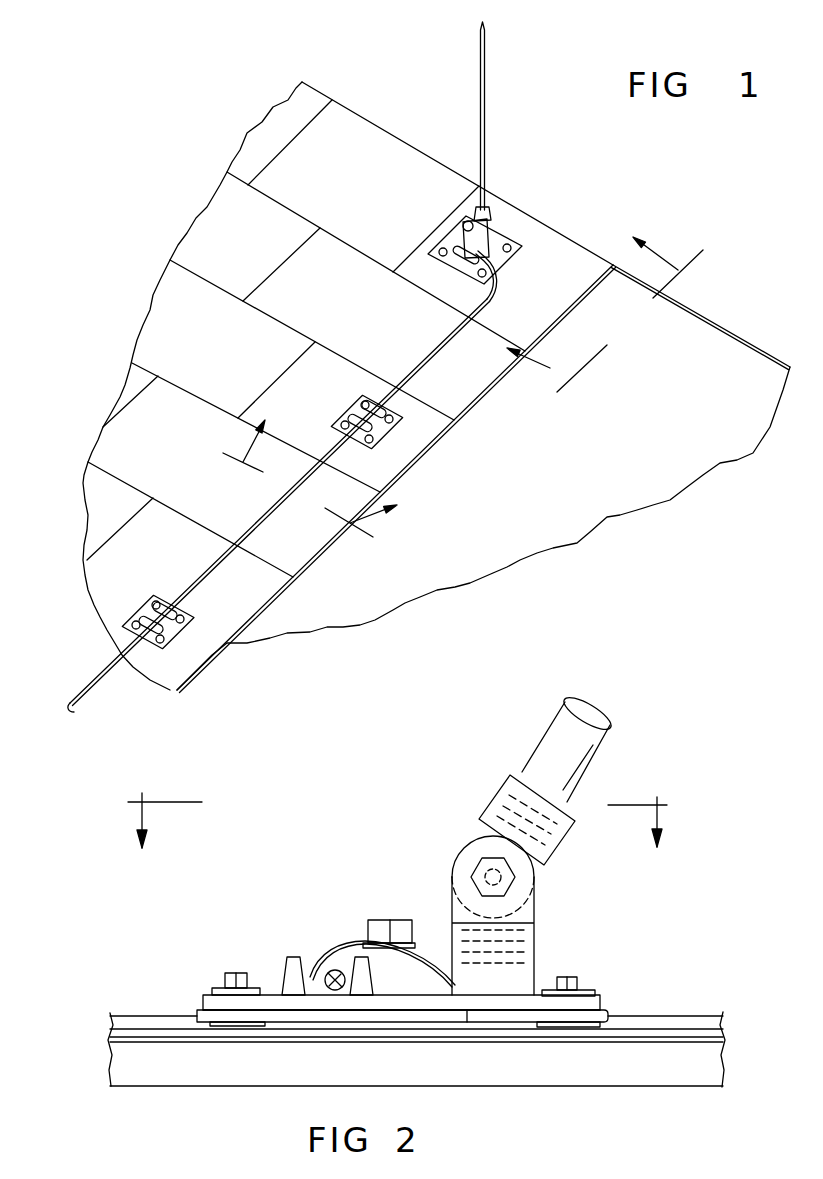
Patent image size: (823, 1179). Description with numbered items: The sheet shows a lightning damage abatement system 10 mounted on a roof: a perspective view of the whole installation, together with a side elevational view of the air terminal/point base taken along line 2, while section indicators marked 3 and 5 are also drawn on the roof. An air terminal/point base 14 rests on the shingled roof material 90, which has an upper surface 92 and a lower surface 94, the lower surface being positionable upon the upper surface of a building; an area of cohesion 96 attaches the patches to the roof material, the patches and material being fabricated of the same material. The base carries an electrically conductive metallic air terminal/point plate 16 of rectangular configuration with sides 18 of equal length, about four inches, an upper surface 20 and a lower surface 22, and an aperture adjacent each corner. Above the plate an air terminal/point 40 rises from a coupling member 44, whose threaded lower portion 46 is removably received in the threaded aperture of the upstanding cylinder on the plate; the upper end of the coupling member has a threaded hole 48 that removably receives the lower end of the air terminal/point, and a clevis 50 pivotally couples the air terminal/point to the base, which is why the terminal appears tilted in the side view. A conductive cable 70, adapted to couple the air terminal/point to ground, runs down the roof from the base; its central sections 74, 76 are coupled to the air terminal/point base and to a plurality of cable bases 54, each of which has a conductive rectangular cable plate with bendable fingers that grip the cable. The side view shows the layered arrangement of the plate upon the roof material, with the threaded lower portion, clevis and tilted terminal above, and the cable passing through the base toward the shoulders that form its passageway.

In FIG. 1, the section line 2- 2 is at (618, 331).
In FIG. 2, the section line 3- 3 is at (404, 810).
In FIG. 1, the section line 5- 5 is at (297, 498).
In FIG. 1, the lightning damage abatement system 10 is at (632, 187).
In FIG. 1, the air terminal/point base 14 is at (503, 228).
In FIG. 2, the air terminal/point base 14 is at (603, 997).
In FIG. 2, the air terminal/point plate 16 is at (200, 1007).
In FIG. 1, the sides 18 is at (455, 270).
In FIG. 2, the upper surface 20 is at (428, 998).
In FIG. 2, the lower surface 22 is at (467, 1013).
In FIG. 1, the air terminal/point 40 is at (485, 110).
In FIG. 2, the air terminal/point 40 is at (545, 740).
In FIG. 2, the coupling member 44 is at (455, 853).
In FIG. 2, the threaded lower portion 46 is at (530, 943).
In FIG. 2, the threaded hole 48 is at (518, 818).
In FIG. 2, the clevis 50 is at (452, 883).
In FIG. 1, the cable bases 54 is at (117, 650).
In FIG. 1, the conductive cable 70 is at (220, 563).
In FIG. 2, the conductive cable 70 is at (330, 960).
In FIG. 1, the central section 74 is at (455, 240).
In FIG. 1, the central section 76 is at (135, 601).
In FIG. 1, the roof material 90 is at (576, 250).
In FIG. 2, the roof material 90 is at (693, 1018).
In FIG. 2, the upper surface 92 is at (633, 1013).
In FIG. 2, the lower surface 94 is at (657, 1037).
In FIG. 2, the area of cohesion 96 is at (505, 1023).